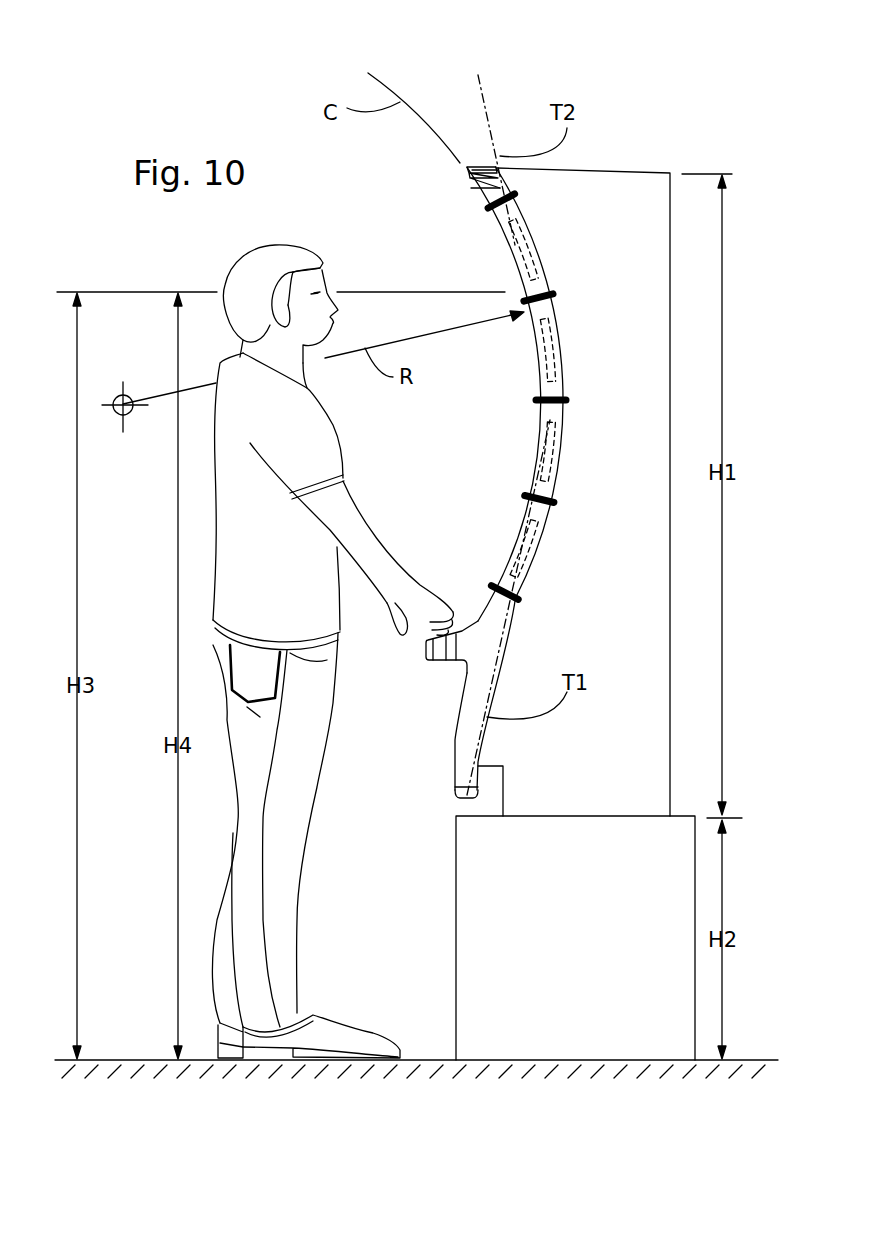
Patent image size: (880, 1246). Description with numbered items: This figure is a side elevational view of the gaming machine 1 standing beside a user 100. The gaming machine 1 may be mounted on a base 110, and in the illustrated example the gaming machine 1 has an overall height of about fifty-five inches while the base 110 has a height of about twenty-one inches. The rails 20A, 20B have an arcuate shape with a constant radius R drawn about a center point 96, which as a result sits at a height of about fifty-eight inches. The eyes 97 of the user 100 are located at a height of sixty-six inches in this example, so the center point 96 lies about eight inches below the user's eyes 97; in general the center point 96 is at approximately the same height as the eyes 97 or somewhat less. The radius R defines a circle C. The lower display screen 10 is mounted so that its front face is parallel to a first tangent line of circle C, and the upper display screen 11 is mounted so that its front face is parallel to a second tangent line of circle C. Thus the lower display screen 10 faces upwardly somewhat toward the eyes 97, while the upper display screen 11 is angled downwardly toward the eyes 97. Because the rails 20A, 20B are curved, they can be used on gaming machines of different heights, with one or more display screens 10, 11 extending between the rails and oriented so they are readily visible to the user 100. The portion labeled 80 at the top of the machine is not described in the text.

The gaming machine 1 is at (688, 300).
The lower display screen 10 is at (527, 525).
The upper display screen 11 is at (513, 267).
The rail 20A is at (537, 388).
The rail 20B is at (537, 450).
The top end portion 80 is at (478, 163).
The center point 96 is at (116, 414).
The eyes 97 is at (320, 290).
The user 100 is at (333, 435).
The base 110 is at (483, 887).